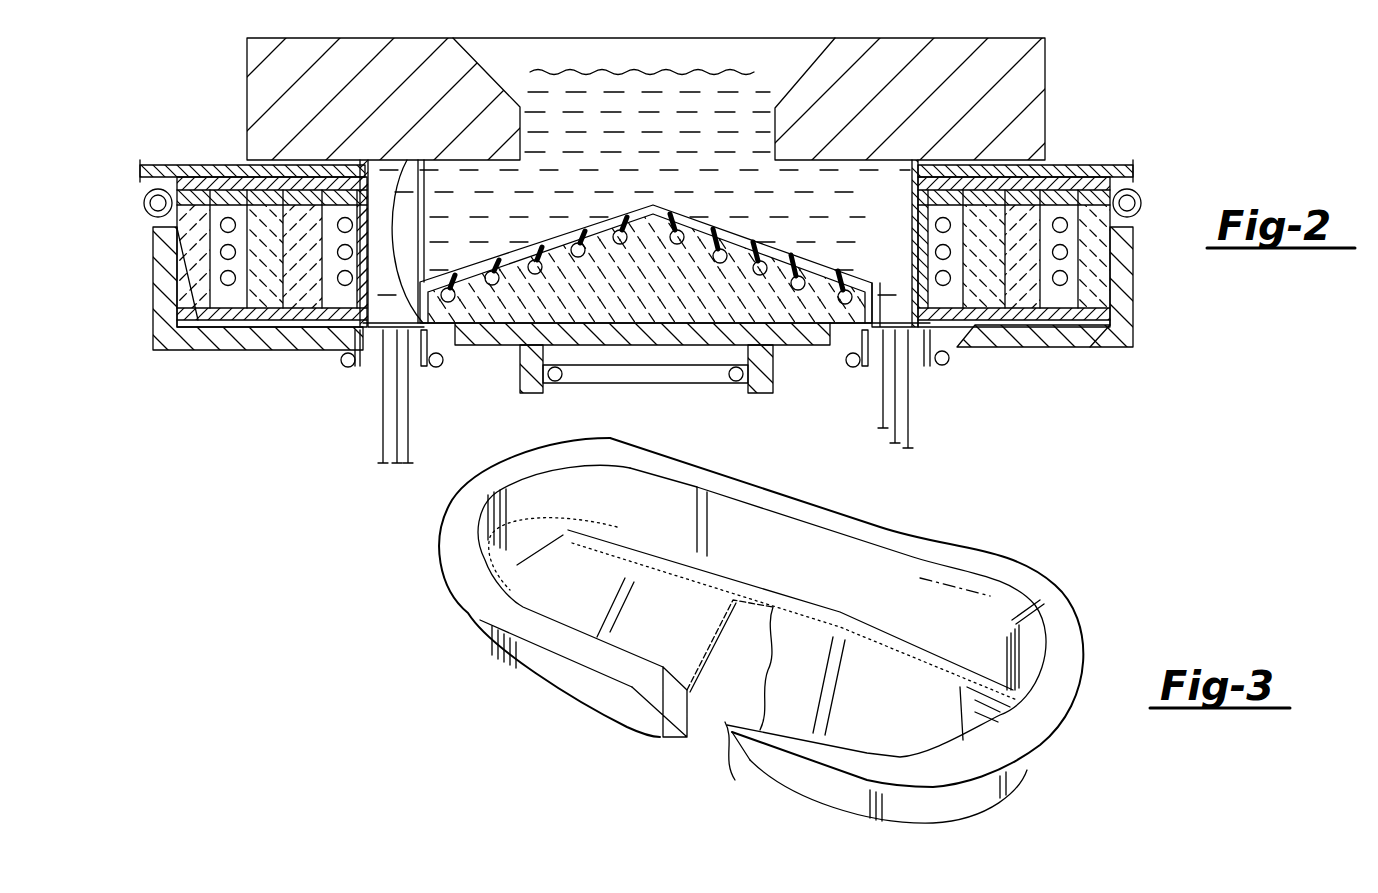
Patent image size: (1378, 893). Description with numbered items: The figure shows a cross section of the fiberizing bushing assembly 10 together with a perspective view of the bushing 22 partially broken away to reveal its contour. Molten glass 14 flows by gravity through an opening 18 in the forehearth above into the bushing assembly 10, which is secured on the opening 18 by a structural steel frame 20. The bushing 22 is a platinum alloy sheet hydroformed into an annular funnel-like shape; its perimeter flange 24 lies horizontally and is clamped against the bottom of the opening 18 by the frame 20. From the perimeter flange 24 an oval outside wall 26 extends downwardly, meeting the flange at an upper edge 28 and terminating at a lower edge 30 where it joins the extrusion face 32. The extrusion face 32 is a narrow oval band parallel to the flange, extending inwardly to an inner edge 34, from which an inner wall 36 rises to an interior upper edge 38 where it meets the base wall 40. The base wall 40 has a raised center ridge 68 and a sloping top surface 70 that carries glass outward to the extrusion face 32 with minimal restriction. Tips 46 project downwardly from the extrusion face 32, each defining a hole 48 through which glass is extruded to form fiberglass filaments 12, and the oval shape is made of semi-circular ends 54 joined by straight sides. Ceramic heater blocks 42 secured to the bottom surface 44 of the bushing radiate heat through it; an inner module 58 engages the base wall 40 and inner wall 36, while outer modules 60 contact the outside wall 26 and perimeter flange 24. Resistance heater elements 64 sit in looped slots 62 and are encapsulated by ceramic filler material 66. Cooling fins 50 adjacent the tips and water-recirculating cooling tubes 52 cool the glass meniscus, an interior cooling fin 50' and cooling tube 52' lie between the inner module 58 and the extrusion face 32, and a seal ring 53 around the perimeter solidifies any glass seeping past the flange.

In FIG. 2, the fiberizing bushing assembly 10 is at (1118, 165).
In FIG. 2, the fiberglass filaments 12 is at (910, 428).
In FIG. 2, the molten glass 14 is at (712, 108).
In FIG. 2, the opening 18 is at (996, 45).
In FIG. 2, the frame 20 is at (197, 352).
In FIG. 2, the bushing 22 is at (903, 207).
In FIG. 3, the bushing 22 is at (1063, 613).
In FIG. 2, the perimeter flange 24 is at (310, 160).
In FIG. 3, the perimeter flange 24 is at (990, 580).
In FIG. 2, the outside wall 26 is at (362, 203).
In FIG. 3, the outside wall 26 is at (887, 590).
In FIG. 2, the upper edge 28 is at (384, 160).
In FIG. 3, the upper edge 28 is at (837, 543).
In FIG. 2, the lower edge 30 is at (367, 360).
In FIG. 3, the lower edge 30 is at (720, 545).
In FIG. 2, the extrusion face 32 is at (382, 168).
In FIG. 3, the extrusion face 32 is at (673, 737).
In FIG. 2, the inner edge 34 is at (417, 375).
In FIG. 3, the inner edge 34 is at (690, 730).
In FIG. 2, the inner wall 36 is at (440, 290).
In FIG. 3, the inner wall 36 is at (690, 703).
In FIG. 2, the interior upper edge 38 is at (420, 282).
In FIG. 3, the interior upper edge 38 is at (660, 700).
In FIG. 2, the base wall 40 is at (527, 245).
In FIG. 3, the base wall 40 is at (687, 650).
In FIG. 2, the heater blocks 42 is at (257, 327).
In FIG. 2, the bottom surface 44 is at (748, 255).
In FIG. 3, the bottom surface 44 is at (722, 630).
In FIG. 2, the tips 46 is at (910, 332).
In FIG. 2, the hole 48 is at (878, 370).
In FIG. 3, the hole 48 is at (953, 607).
In FIG. 2, the cooling fins 50 is at (593, 324).
In FIG. 2, the interior cooling fin 50' is at (644, 374).
In FIG. 2, the cooling tubes 52 is at (645, 388).
In FIG. 2, the interior cooling tube 52' is at (644, 382).
In FIG. 2, the seal ring 53 is at (1140, 210).
In FIG. 3, the semi-circular ends 54 is at (1057, 727).
In FIG. 2, the inner module 58 is at (585, 325).
In FIG. 2, the outer modules 60 is at (1127, 305).
In FIG. 2, the slots 62 is at (1068, 228).
In FIG. 2, the resistance heater elements 64 is at (1138, 210).
In FIG. 2, the ceramic filler material 66 is at (1068, 250).
In FIG. 3, the raised center ridge 68 is at (635, 493).
In FIG. 2, the sloping top surface 70 is at (687, 213).
In FIG. 3, the sloping top surface 70 is at (690, 638).